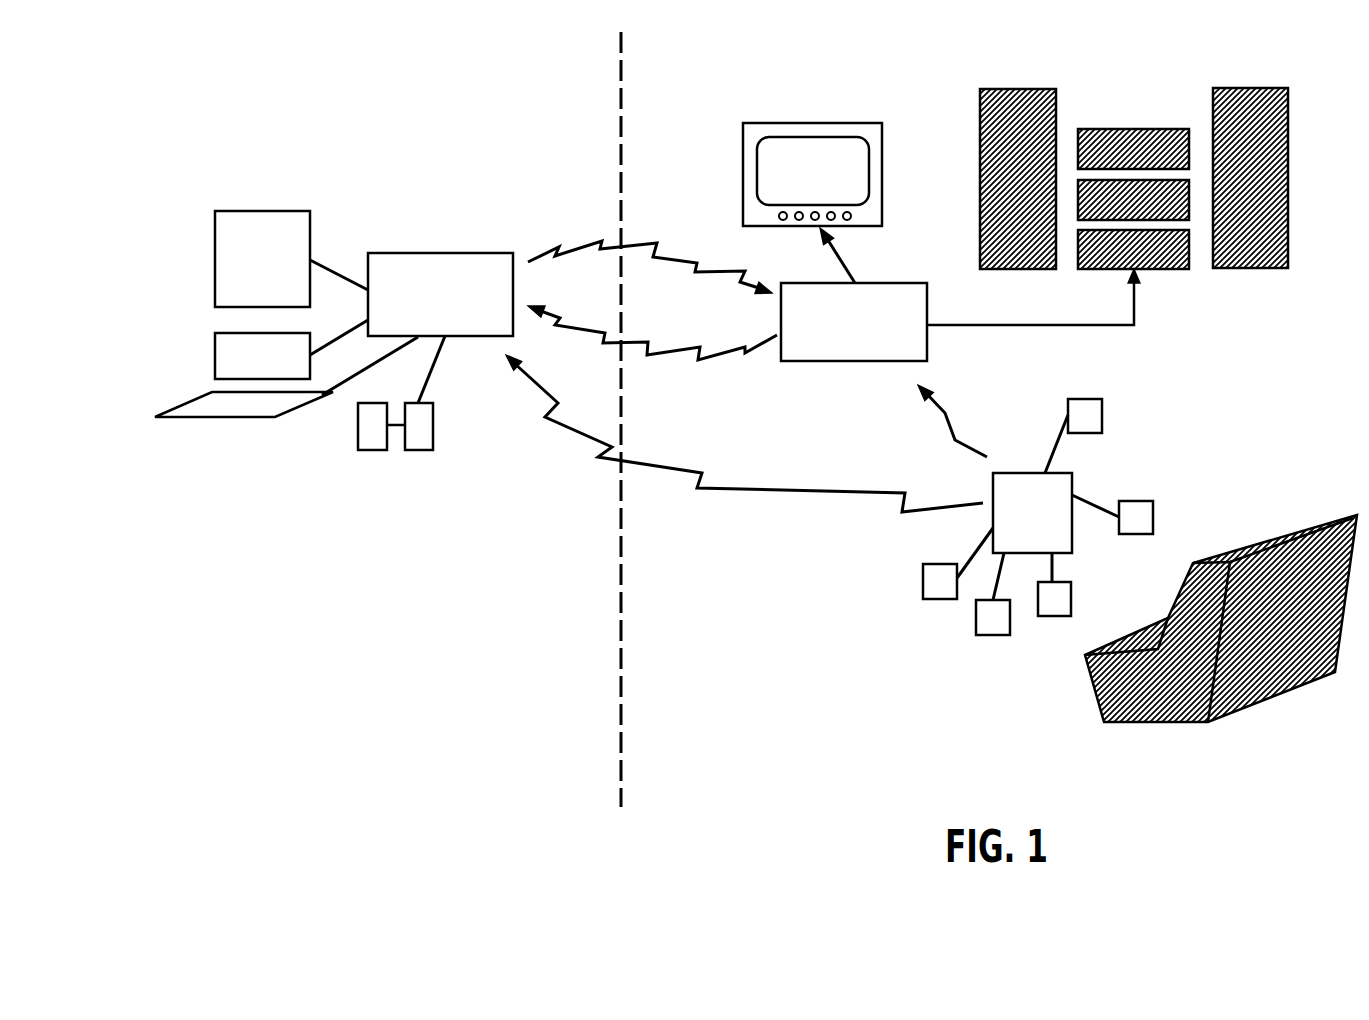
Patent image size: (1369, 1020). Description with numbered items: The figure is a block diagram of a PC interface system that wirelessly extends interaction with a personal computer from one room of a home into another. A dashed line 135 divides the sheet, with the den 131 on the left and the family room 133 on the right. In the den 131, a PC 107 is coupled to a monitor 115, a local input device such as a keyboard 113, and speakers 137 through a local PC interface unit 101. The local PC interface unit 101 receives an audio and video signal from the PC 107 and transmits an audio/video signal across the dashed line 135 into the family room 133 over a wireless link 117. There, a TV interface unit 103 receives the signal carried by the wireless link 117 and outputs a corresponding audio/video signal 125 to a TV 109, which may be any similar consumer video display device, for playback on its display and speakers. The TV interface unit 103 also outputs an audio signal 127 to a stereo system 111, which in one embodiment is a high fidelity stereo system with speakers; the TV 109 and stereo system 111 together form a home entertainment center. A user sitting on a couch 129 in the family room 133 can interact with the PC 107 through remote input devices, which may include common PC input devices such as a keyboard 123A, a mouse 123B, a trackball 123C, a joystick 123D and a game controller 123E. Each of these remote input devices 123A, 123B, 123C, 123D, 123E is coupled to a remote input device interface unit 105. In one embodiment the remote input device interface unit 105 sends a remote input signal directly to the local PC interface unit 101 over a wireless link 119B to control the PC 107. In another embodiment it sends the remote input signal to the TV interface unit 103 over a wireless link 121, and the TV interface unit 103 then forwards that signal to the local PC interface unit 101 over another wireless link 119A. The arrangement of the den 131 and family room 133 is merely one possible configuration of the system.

The local PC interface unit 101 is at (449, 247).
The TV interface unit 103 is at (860, 362).
The remote input device interface unit 105 is at (1073, 477).
The PC 107 is at (208, 345).
The TV 109 is at (848, 117).
The stereo system 111 is at (1128, 123).
The keyboard 113 is at (228, 420).
The monitor 115 is at (287, 208).
The wireless link 117 is at (667, 250).
The wireless link 119A is at (640, 335).
The wireless link 119B is at (647, 458).
The wireless link 121 is at (952, 412).
The keyboard 123A is at (922, 588).
The mouse 123B is at (983, 635).
The trackball 123C is at (1072, 585).
The joystick 123D is at (1162, 499).
The game controller 123E is at (1103, 405).
The audio/video signal 125 is at (845, 258).
The audio signal 127 is at (1143, 312).
The couch 129 is at (1297, 687).
The den 131 is at (183, 673).
The family room 133 is at (725, 673).
The dashed line 135 is at (618, 790).
The speakers 137 is at (430, 453).